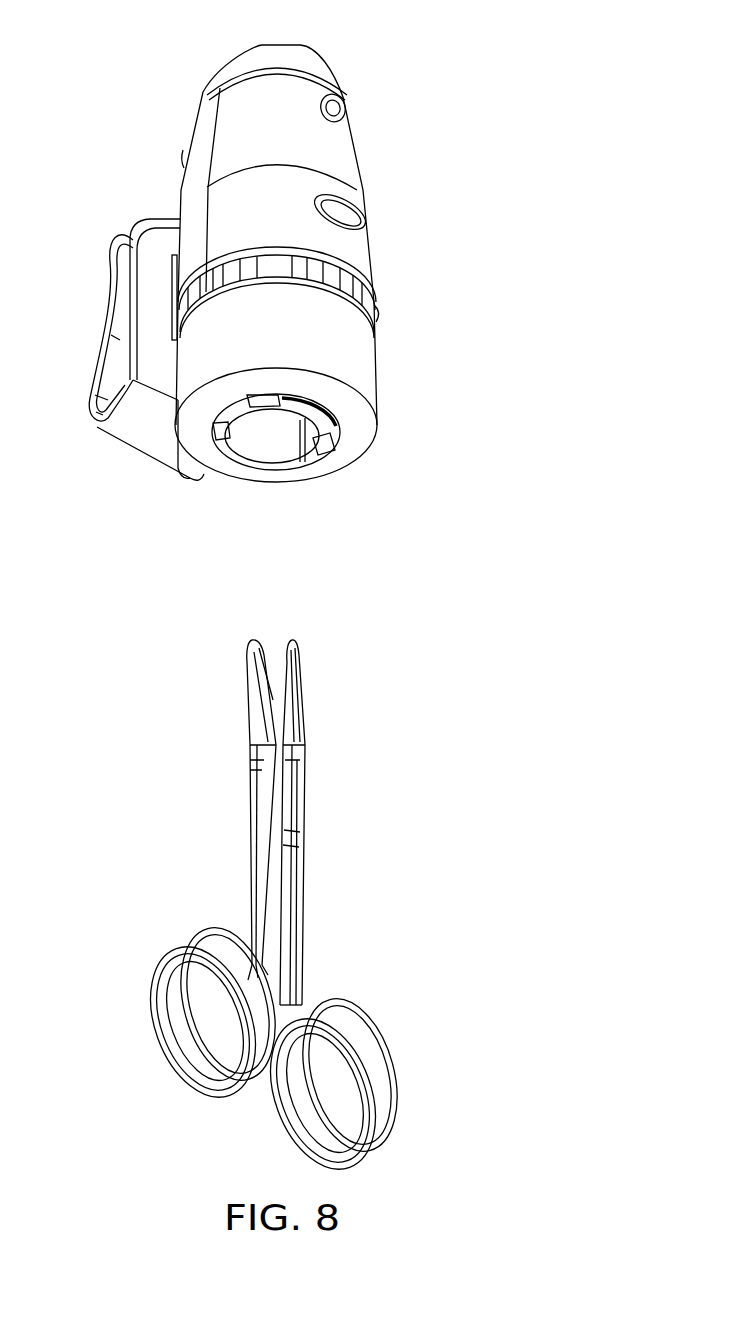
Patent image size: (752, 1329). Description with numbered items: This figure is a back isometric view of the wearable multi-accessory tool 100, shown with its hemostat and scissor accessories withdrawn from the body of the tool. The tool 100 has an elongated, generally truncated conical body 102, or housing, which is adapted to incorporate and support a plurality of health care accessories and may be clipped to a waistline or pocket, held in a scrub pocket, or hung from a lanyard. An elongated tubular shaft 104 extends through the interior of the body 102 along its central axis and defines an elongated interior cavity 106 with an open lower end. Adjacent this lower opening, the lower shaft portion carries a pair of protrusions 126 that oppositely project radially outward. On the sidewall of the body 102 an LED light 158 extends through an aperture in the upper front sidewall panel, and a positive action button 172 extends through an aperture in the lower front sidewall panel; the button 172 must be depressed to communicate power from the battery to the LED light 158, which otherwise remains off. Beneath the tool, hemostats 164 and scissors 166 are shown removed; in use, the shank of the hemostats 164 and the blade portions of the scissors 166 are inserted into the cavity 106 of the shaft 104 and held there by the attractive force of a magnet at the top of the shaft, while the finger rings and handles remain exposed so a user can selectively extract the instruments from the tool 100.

The wearable multi-accessory tool 100 is at (122, 70).
The body 102 is at (372, 191).
The elongated tubular shaft 104 is at (313, 478).
The cavity 106 is at (275, 438).
The protrusions 126 is at (242, 470).
The LED light 158 is at (345, 108).
The positive action button 172 is at (352, 207).
The hemostats 164 is at (262, 784).
The scissors 166 is at (303, 812).